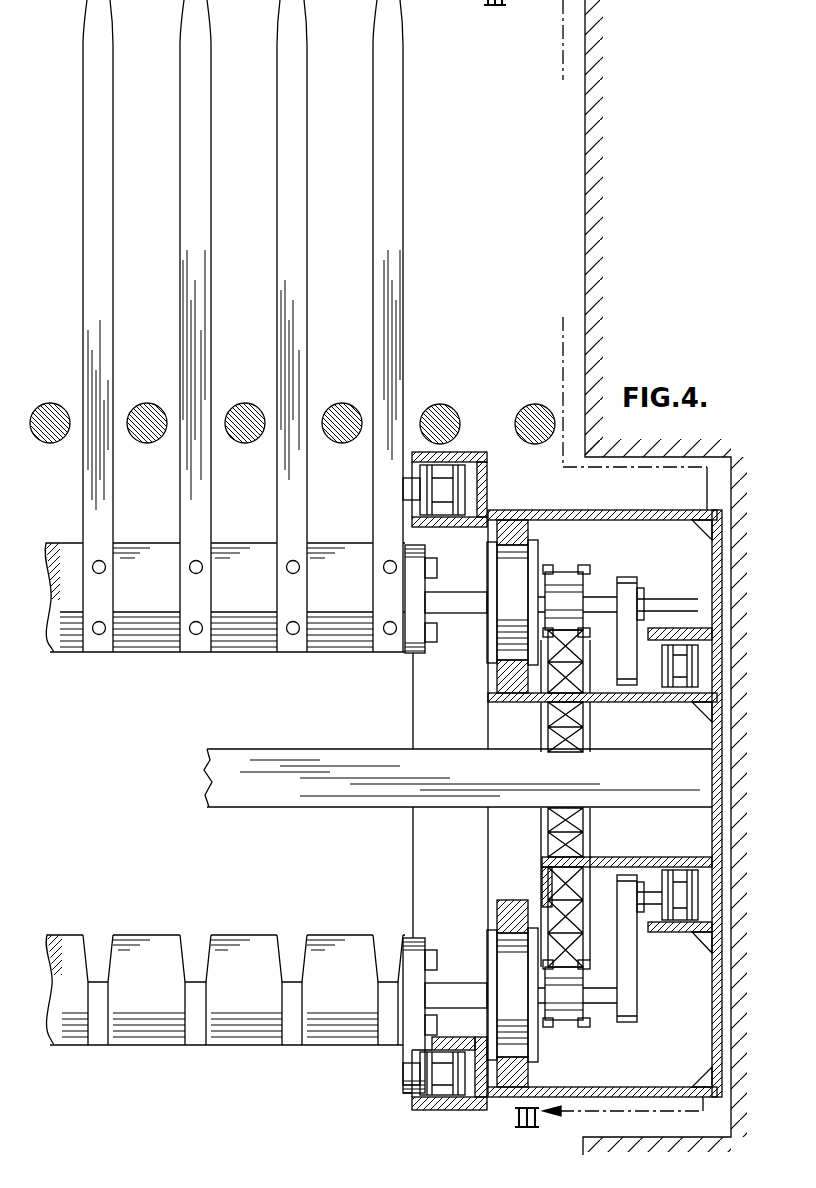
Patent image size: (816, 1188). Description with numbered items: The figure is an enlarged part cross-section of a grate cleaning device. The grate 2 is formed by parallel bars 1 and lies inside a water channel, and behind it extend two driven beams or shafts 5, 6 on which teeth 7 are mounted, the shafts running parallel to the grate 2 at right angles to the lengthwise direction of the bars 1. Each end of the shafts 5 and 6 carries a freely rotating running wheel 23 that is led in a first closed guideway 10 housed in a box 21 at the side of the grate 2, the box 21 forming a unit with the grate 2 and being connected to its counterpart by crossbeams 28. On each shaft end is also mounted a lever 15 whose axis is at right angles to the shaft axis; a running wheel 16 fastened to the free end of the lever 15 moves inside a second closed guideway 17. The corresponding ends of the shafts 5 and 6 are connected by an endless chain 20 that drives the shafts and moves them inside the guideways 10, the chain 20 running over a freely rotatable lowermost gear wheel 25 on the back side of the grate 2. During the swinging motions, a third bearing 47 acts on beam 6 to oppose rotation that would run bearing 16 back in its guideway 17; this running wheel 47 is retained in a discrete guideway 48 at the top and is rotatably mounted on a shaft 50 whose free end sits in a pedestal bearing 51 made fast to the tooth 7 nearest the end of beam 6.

The bars 1 is at (531, 402).
The grate 2 is at (461, 395).
The shaft 5 is at (348, 635).
The shaft 6 is at (250, 955).
The teeth 7 is at (396, 365).
The first closed guideway 10 is at (512, 555).
The lever 15 is at (628, 615).
The running wheel 16 is at (678, 690).
The second closed guideway 17 is at (680, 640).
The endless chain 20 is at (565, 597).
The box 21 is at (628, 518).
The running wheel 23 is at (500, 617).
The lowermost gear wheel 25 is at (577, 948).
The crossbeams 28 is at (232, 770).
The third bearing 47 is at (440, 492).
The discrete guideway 48 is at (450, 468).
The shaft 50 is at (415, 1075).
The pedestal bearing 51 is at (375, 1075).